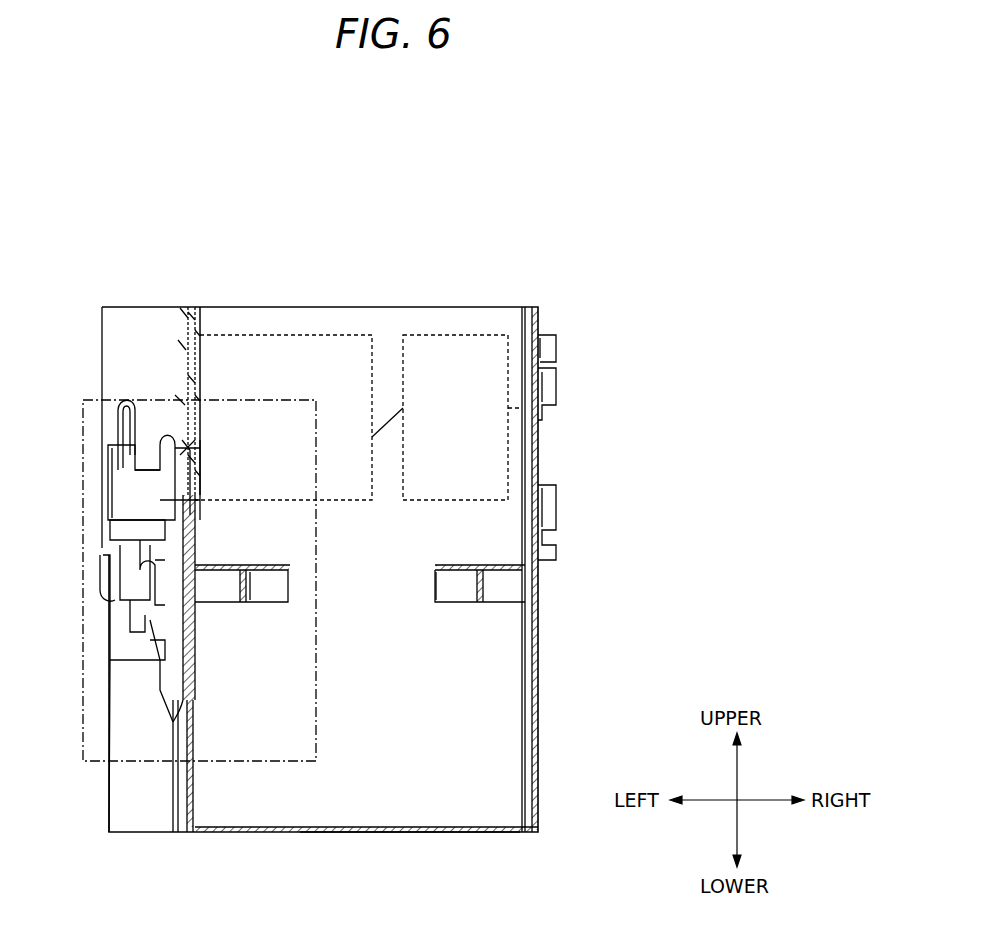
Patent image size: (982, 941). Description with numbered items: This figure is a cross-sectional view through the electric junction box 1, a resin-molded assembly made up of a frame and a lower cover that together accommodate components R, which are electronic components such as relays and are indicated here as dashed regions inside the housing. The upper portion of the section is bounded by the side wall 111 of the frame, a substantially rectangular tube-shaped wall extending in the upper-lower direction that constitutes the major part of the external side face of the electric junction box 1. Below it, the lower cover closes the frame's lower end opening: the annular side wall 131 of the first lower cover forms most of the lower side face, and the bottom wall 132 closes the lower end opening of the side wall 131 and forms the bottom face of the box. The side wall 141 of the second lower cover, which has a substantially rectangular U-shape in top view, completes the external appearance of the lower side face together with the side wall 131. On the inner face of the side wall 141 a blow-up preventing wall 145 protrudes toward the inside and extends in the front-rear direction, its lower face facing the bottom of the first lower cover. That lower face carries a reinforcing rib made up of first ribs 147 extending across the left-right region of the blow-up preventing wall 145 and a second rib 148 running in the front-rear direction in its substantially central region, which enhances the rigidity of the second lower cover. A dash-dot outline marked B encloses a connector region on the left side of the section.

The electric junction box 1 is at (668, 305).
The side wall 111 is at (190, 306).
The side wall 131 is at (188, 832).
The bottom wall 132 is at (408, 833).
The side wall 141 is at (192, 680).
The blow-up preventing wall 145 is at (234, 567).
The first rib 147 is at (266, 592).
The second rib 148 is at (243, 597).
The connector region B is at (82, 424).
The component R is at (268, 356).